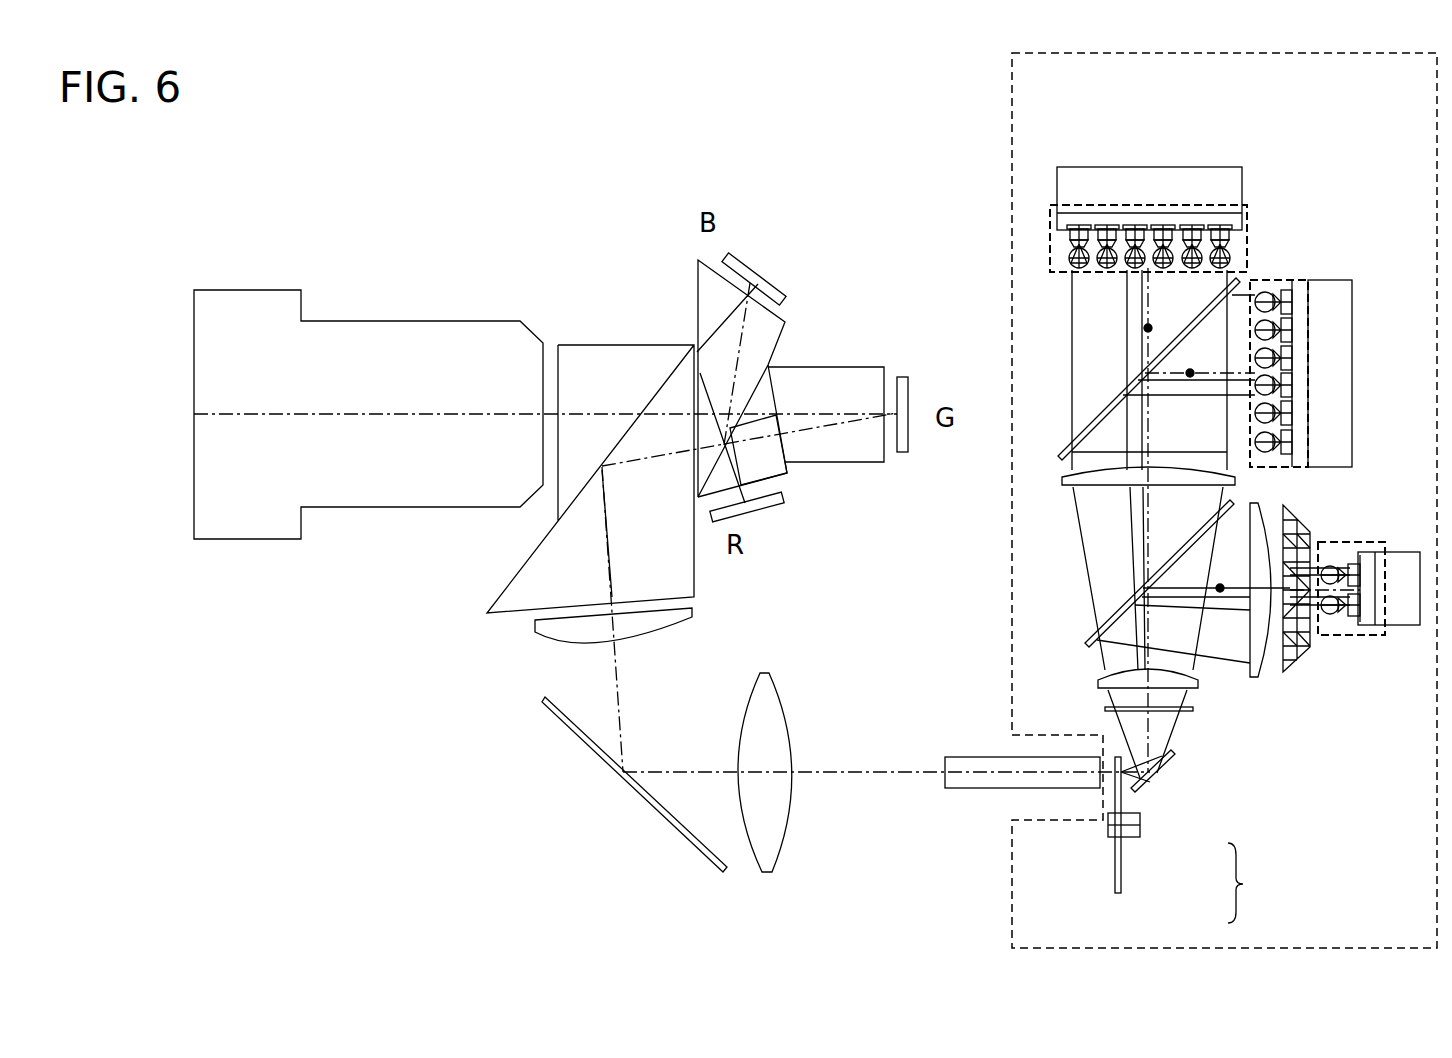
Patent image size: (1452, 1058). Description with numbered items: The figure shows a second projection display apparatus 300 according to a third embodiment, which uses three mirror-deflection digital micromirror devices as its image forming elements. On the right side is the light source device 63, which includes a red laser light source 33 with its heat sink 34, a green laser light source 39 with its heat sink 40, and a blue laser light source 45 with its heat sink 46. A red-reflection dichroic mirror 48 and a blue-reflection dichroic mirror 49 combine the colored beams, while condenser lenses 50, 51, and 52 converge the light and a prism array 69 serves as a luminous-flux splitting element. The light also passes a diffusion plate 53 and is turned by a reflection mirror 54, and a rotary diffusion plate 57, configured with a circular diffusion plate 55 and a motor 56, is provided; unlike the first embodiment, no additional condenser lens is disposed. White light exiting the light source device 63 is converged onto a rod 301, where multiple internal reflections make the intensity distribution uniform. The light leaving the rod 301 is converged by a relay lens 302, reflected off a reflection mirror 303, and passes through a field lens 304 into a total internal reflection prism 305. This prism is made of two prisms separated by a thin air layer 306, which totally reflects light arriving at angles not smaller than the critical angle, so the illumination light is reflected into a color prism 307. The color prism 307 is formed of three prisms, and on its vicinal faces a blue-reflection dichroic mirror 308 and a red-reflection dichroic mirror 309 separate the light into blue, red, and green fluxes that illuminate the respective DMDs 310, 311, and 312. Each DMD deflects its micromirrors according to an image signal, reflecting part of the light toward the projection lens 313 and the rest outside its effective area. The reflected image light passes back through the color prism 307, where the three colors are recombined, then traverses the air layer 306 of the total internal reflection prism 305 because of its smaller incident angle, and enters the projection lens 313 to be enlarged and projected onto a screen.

The second projection display apparatus 300 is at (305, 176).
The rod 301 is at (980, 787).
The relay lens 302 is at (782, 850).
The reflection mirror 303 is at (685, 838).
The field lens 304 is at (690, 612).
The total internal reflection prism 305 is at (540, 560).
The air layer 306 is at (662, 383).
The color prism 307 is at (862, 448).
The blue-reflection dichroic mirror 308 is at (768, 367).
The red-reflection dichroic mirror 309 is at (773, 387).
The DMD 310 is at (747, 262).
The DMD 311 is at (762, 507).
The DMD 312 is at (908, 385).
The projection lens 313 is at (365, 319).
The light source device 63 is at (1010, 97).
The heat sink 40 is at (1242, 173).
The green laser light source 39 is at (1247, 213).
The red laser light source 33 is at (1262, 278).
The heat sink 34 is at (1338, 278).
The blue laser light source 45 is at (1345, 540).
The heat sink 46 is at (1398, 618).
The red-reflection dichroic mirror 48 is at (1063, 447).
The blue-reflection dichroic mirror 49 is at (1093, 635).
The condenser lens 50 is at (1063, 487).
The condenser lens 51 is at (1252, 680).
The condenser lens 52 is at (1103, 680).
The diffusion plate 53 is at (1192, 708).
The reflection mirror 54 is at (1168, 770).
The circular diffusion plate 55 is at (1122, 880).
The motor 56 is at (1138, 837).
The rotary diffusion plate 57 is at (1254, 883).
The prism array 69 is at (1302, 653).